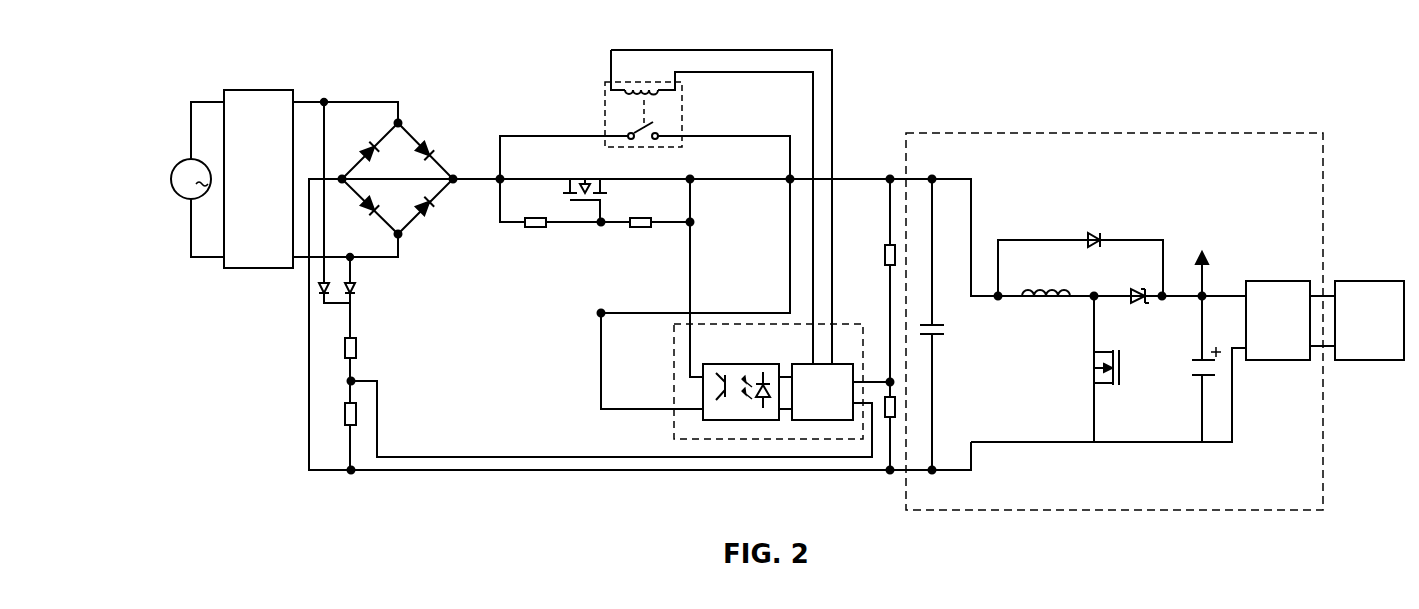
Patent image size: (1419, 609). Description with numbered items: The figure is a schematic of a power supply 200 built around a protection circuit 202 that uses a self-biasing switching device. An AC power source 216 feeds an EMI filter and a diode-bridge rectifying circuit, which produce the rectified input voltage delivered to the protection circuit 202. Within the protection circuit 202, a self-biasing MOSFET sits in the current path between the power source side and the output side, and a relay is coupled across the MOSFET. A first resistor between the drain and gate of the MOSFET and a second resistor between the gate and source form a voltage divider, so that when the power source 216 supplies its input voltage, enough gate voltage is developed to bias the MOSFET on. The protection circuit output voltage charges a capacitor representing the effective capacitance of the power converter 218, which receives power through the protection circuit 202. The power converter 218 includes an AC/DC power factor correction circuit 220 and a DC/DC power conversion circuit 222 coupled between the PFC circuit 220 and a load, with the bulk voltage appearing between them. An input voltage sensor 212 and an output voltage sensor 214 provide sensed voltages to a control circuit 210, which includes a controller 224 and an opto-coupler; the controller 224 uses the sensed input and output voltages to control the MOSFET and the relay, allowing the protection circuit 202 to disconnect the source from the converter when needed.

The power supply 200 is at (220, 36).
The protection circuit 202 is at (555, 256).
The control circuit 210 is at (741, 440).
The input voltage sensor 212 is at (383, 364).
The output voltage sensor 214 is at (876, 344).
The AC power source 216 is at (171, 180).
The power converter 218 is at (975, 132).
The AC/DC power factor correction circuit 220 is at (1137, 211).
The DC/DC power conversion circuit 222 is at (1278, 361).
The controller 224 is at (823, 422).